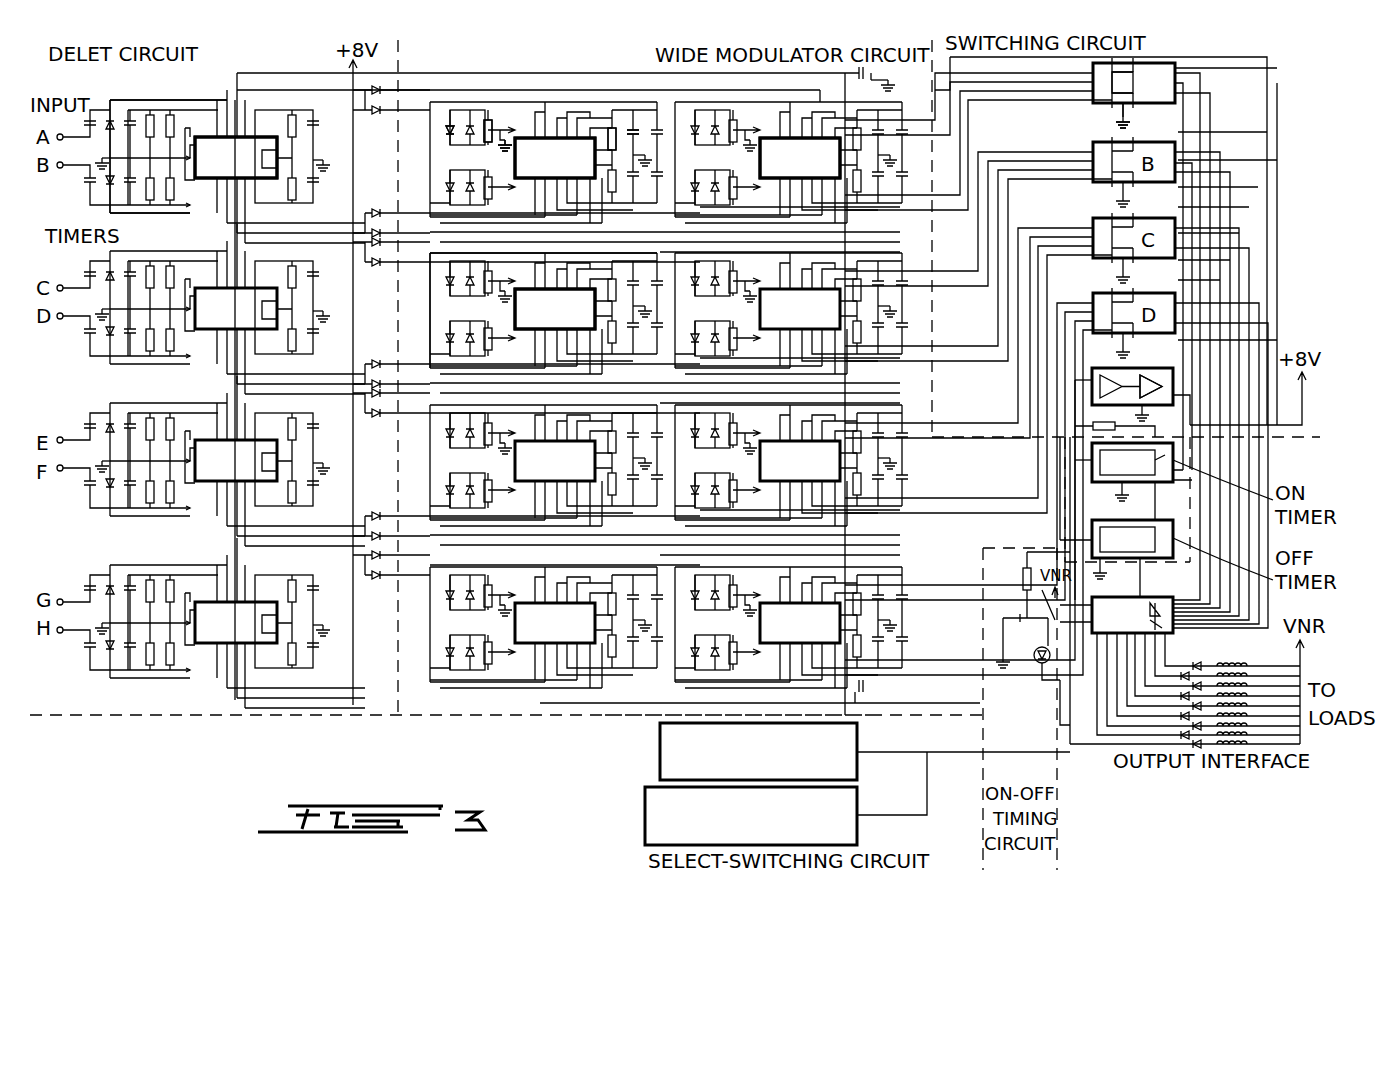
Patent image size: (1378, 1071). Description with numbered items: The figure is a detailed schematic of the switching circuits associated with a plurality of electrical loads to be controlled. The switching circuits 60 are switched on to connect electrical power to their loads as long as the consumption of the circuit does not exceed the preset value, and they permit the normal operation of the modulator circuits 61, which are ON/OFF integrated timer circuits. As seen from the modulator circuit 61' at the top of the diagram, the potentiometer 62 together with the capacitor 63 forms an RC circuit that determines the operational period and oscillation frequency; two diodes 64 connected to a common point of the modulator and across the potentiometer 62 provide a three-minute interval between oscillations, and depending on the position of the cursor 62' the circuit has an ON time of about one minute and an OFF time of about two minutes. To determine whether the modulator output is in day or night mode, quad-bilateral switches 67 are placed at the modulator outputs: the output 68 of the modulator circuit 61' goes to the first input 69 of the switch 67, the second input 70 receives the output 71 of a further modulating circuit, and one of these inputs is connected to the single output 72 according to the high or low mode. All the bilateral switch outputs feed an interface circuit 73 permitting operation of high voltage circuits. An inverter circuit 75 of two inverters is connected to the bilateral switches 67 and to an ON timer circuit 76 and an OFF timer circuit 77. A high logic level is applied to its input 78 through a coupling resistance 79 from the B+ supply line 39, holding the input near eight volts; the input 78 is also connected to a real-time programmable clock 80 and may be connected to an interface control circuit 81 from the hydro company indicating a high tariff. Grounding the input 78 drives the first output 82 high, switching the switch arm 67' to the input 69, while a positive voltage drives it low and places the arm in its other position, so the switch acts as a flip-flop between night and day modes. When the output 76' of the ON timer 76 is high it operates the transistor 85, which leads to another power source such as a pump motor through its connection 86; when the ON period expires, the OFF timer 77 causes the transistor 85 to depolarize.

The switching circuits 60 is at (215, 148).
The modulator circuits 61 is at (538, 509).
The modulator circuit 61' is at (501, 163).
The potentiometer 62 is at (478, 95).
The cursor of the potentiometer 62' is at (522, 98).
The capacitor 63 is at (633, 128).
The diodes 64 is at (448, 132).
The output of the modulator circuit 68 is at (608, 127).
The quad-bilateral switches 67 is at (1162, 78).
The switch arm of the bilateral switch 67' is at (1182, 107).
The first input of the switch 69 is at (1110, 68).
The second input of the switch 70 is at (1095, 80).
The output of the further modulating circuit 71 is at (930, 150).
The output of the bilateral switch 72 is at (1267, 57).
The interface circuit 73 is at (1165, 633).
The inverter circuit 75 is at (1182, 372).
The ON timer circuit 76 is at (1088, 486).
The output of the ON timer 76' is at (1051, 480).
The OFF timer circuit 77 is at (1128, 535).
The input of the inverter 78 is at (1090, 426).
The coupling resistance 79 is at (1075, 380).
The first output of the inverter 82 is at (1130, 374).
The B+ supply line 39 is at (1302, 420).
The transistor 85 is at (1020, 614).
The connection 86 is at (1088, 748).
The real-time programmable clock 80 is at (660, 740).
The interface control circuit 81 is at (645, 820).